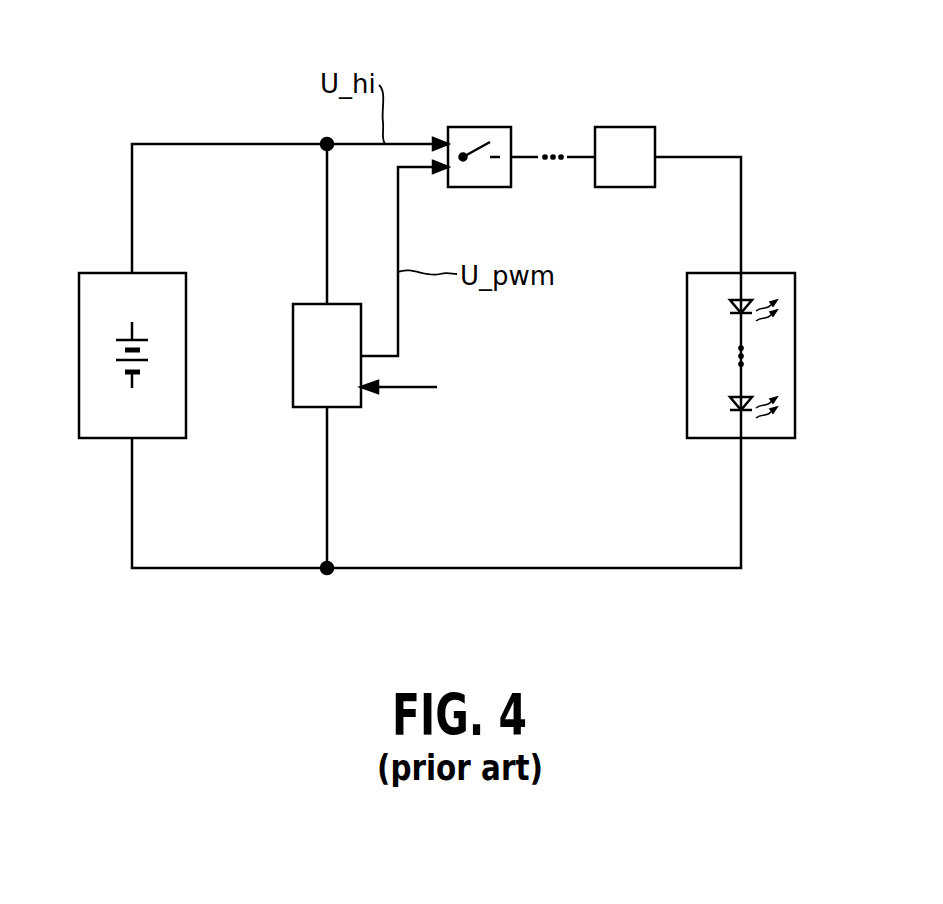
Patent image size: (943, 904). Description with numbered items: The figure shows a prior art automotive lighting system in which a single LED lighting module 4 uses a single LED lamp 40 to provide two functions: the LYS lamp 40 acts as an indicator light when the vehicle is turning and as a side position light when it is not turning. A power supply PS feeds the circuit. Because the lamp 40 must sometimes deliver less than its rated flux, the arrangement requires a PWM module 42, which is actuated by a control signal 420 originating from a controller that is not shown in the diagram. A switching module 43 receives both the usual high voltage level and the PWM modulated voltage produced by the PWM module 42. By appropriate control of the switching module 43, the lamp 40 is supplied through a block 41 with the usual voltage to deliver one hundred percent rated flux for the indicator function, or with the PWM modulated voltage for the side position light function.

The LED lighting module 4 is at (742, 92).
The LED lamp 40 is at (782, 266).
The block (ballast/driver stage) 41 is at (626, 127).
The PWM module 42 is at (305, 304).
The control signal 420 is at (403, 388).
The switching module 43 is at (478, 127).
The power supply PS is at (96, 273).